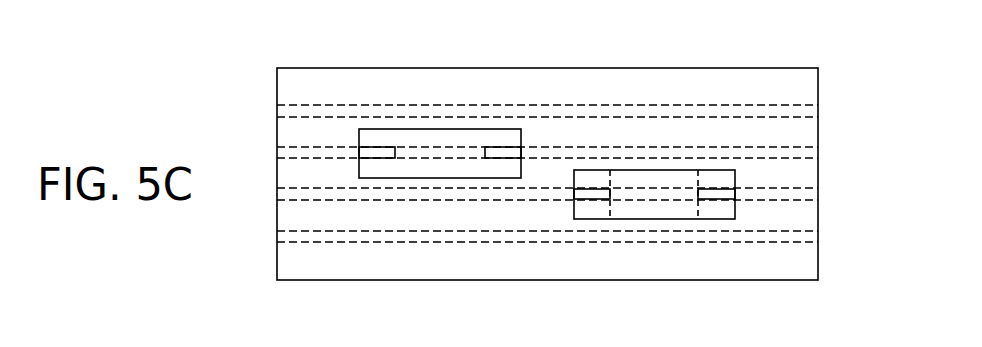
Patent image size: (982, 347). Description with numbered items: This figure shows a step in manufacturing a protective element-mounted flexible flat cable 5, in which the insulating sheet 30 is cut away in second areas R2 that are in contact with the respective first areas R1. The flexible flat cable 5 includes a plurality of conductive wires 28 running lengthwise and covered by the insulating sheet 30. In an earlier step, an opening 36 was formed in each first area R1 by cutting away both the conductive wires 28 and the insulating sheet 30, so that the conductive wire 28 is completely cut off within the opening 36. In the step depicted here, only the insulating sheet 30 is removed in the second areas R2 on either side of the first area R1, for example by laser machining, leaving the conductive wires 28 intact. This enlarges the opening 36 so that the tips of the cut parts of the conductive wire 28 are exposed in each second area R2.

The flexible flat cable 5 is at (581, 174).
The insulating sheet 30 is at (812, 48).
The conductive wire 28 is at (787, 117).
The opening 36 is at (652, 219).
The first area R1 is at (665, 169).
The second area R2 is at (593, 169).